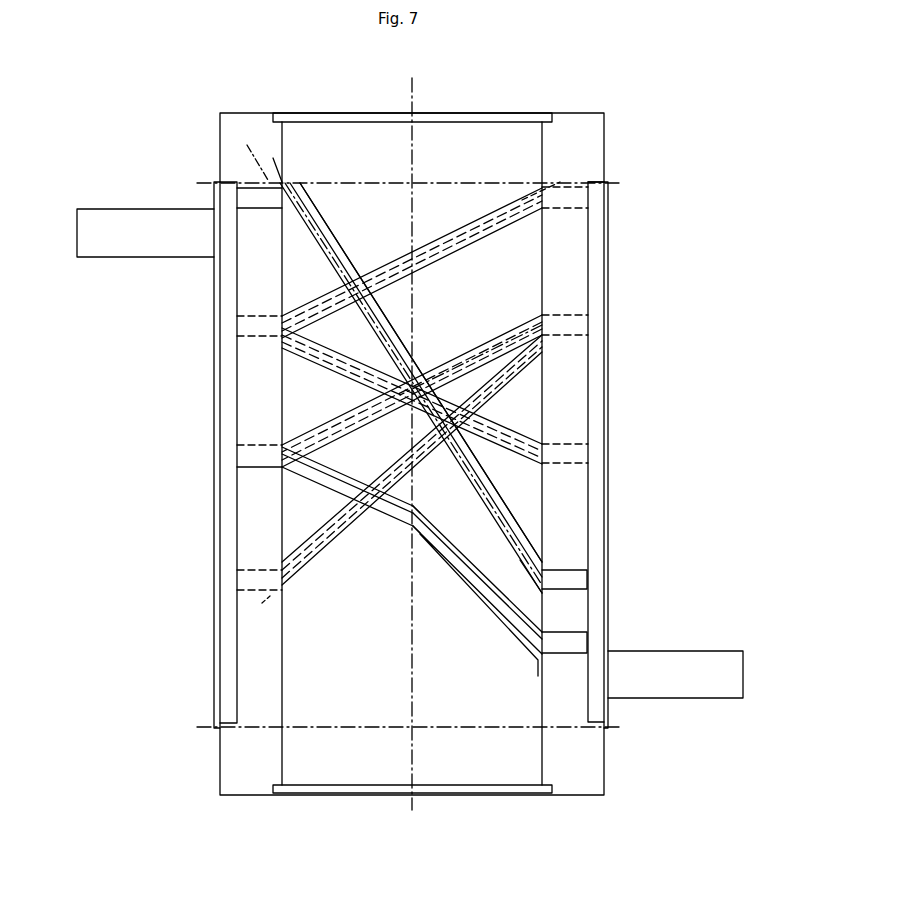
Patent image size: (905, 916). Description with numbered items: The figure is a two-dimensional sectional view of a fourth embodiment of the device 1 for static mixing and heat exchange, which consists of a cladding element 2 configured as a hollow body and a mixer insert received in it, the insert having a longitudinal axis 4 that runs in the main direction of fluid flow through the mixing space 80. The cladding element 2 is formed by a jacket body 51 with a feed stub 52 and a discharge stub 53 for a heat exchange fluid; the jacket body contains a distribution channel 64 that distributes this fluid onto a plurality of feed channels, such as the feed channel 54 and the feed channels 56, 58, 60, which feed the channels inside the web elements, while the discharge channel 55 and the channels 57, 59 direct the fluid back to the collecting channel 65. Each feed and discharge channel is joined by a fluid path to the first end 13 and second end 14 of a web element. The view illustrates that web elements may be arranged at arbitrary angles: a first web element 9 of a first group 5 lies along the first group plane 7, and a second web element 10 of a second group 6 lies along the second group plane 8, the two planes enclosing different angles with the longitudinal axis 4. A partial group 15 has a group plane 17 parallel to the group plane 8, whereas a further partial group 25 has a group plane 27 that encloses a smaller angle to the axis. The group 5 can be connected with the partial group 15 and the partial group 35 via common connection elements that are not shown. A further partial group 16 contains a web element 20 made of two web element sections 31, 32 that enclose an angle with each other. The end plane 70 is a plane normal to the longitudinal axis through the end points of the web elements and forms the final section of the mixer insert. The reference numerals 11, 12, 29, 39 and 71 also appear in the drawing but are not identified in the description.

The device 1 is at (142, 574).
The cladding element 2 is at (216, 747).
The longitudinal axis 4 is at (412, 800).
The first group 5 is at (324, 282).
The second group 6 is at (392, 261).
The first group plane 7 is at (247, 143).
The second group plane 8 is at (590, 186).
The first web element 9 is at (318, 262).
The second web element 10 is at (491, 209).
The steep chute 11 is at (366, 320).
The flow line 12 is at (526, 206).
The first end 13 is at (538, 582).
The second end 14 is at (272, 160).
The partial group 15 is at (471, 345).
The second partial group 16 is at (441, 562).
The group plane 17 is at (524, 334).
The web element 20 is at (391, 521).
The partial group 25 is at (396, 456).
The group plane 27 is at (254, 612).
The flow line 29 is at (491, 340).
The web element section 31 is at (326, 472).
The web element section 32 is at (490, 593).
The partial group 35 is at (331, 373).
The flow line 39 is at (333, 374).
The jacket body 51 is at (568, 643).
The feed stub 52 is at (108, 235).
The discharge stub 53 is at (722, 685).
The feed channel 54 is at (254, 198).
The discharge channel 55 is at (566, 455).
The feed channel 56 is at (259, 330).
The channel 57 is at (572, 580).
The feed channel 58 is at (259, 459).
The channel 59 is at (580, 203).
The feed channel 60 is at (259, 582).
The distribution channel 64 is at (231, 652).
The collecting channel 65 is at (580, 333).
The end plane 70 is at (345, 182).
The lower reference plane 71 is at (345, 729).
The mixing space 80 is at (350, 677).